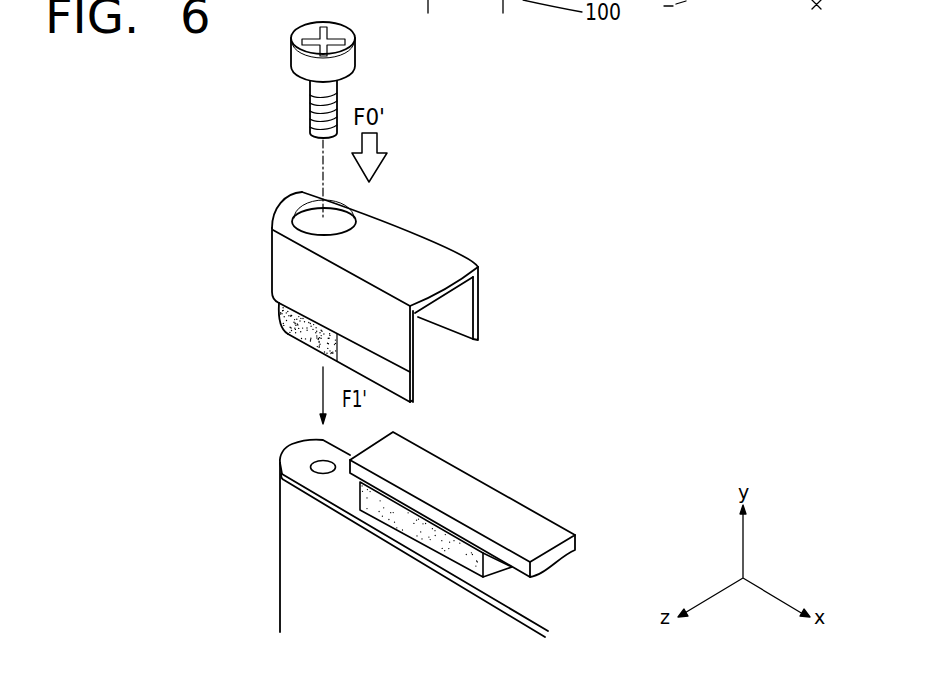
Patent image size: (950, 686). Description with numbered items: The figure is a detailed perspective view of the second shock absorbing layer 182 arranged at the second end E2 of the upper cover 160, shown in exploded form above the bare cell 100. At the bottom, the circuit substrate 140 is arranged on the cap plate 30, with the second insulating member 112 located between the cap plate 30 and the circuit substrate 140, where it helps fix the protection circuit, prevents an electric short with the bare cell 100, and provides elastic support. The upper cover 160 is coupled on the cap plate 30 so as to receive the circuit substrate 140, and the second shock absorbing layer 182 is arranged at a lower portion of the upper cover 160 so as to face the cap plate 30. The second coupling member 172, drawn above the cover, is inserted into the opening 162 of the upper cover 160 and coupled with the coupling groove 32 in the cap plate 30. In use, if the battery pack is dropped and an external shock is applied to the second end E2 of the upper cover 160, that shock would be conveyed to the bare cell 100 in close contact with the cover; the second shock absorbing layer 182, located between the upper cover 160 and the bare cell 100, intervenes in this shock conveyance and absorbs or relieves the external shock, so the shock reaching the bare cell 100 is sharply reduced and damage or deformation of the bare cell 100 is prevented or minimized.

The second coupling member 172 is at (296, 61).
The opening 162 is at (314, 221).
The upper cover 160 is at (423, 248).
The second shock absorbing layer 182 is at (307, 333).
The second end E2 is at (271, 326).
The bare cell 100 is at (279, 558).
The cap plate 30 is at (332, 495).
The coupling groove 32 is at (325, 470).
The circuit substrate 140 is at (467, 487).
The second insulating member 112 is at (422, 530).